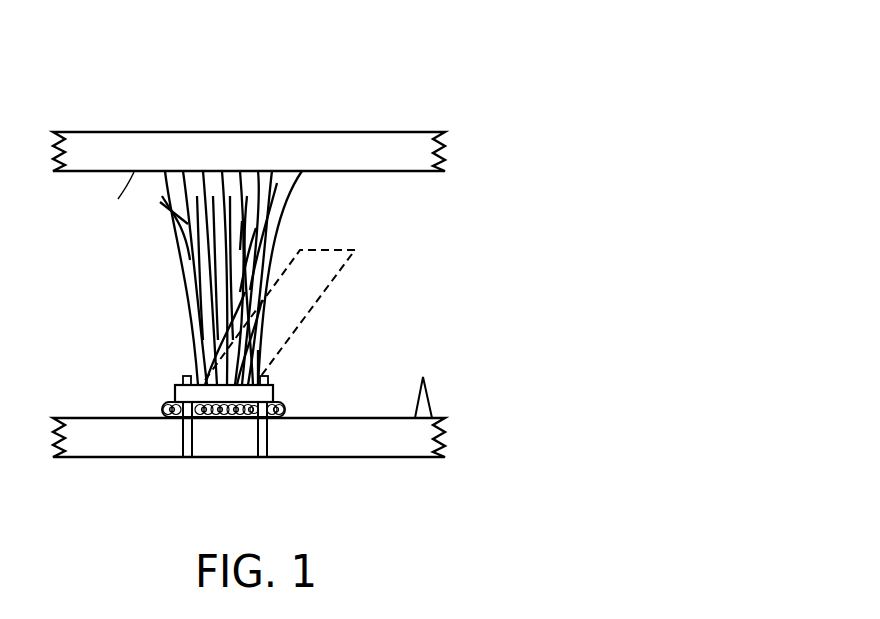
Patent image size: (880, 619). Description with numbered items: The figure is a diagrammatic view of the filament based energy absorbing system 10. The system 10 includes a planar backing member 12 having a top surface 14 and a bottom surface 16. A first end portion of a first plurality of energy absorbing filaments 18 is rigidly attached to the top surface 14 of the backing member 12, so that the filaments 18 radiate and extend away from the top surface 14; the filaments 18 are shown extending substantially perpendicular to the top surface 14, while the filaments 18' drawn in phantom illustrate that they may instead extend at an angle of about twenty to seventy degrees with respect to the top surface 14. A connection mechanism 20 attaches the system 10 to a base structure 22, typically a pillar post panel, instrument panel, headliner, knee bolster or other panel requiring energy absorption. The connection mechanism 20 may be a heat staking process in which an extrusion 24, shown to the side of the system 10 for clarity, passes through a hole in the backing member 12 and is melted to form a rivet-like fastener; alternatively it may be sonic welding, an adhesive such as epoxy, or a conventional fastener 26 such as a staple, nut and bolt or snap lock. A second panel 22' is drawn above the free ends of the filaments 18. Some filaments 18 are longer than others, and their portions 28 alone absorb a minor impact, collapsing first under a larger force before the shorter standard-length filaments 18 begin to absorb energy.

The filament based energy absorbing system 10 is at (444, 94).
The backing member 12 is at (175, 390).
The top surface 14 is at (280, 348).
The bottom surface 16 is at (233, 418).
The first plurality of energy absorbing filaments 18 is at (204, 278).
The angled filaments 18' is at (326, 311).
The connection mechanism 20 is at (285, 410).
The base structure 22 is at (249, 471).
The upper circuit board 22' is at (249, 122).
The extrusion 24 is at (430, 394).
The conventional fastener 26 is at (184, 440).
The portions of the longer filaments 28 is at (143, 181).